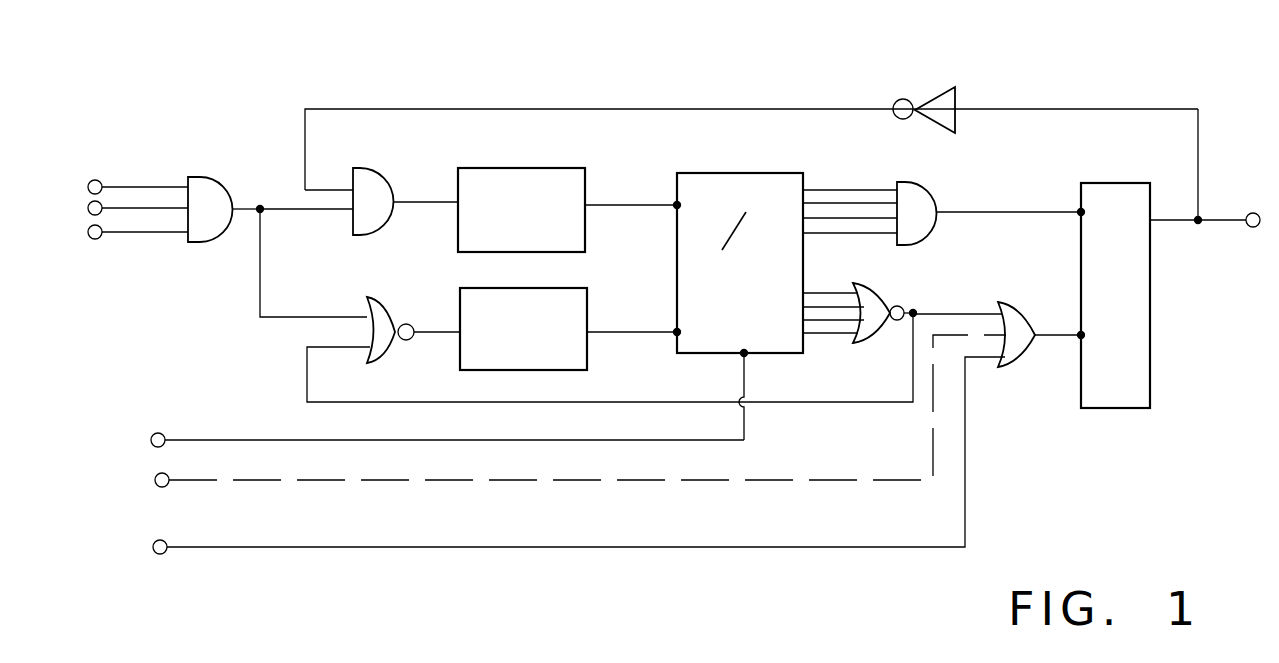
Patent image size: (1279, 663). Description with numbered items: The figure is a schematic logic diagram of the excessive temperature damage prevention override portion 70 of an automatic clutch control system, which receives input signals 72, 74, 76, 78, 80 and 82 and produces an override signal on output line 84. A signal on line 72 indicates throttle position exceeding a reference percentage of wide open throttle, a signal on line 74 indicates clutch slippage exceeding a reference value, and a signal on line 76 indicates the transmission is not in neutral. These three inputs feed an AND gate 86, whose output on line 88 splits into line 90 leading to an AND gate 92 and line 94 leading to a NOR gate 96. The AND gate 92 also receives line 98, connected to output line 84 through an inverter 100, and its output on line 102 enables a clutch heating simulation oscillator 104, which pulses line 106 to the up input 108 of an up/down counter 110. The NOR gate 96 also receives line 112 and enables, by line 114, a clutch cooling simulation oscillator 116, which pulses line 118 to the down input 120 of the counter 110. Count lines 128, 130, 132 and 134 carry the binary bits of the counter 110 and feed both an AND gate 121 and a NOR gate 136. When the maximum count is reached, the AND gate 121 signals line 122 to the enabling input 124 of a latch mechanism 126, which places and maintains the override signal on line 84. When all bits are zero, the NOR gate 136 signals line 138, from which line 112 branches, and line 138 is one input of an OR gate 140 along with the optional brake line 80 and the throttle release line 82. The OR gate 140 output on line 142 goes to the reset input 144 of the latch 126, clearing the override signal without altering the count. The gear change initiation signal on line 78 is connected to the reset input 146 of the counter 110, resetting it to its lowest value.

The excessive temperature damage prevention override portion 70 is at (712, 86).
The throttle position signal line 72 is at (116, 186).
The clutch slippage signal line 74 is at (138, 208).
The not-in-neutral signal line 76 is at (160, 232).
The gear change initiation signal line 78 is at (236, 440).
The brake application signal line 80 is at (275, 480).
The throttle release signal line 82 is at (298, 547).
The output line 84 is at (1228, 217).
The AND gate 86 is at (212, 178).
The signal line 88 is at (247, 207).
The line 90 is at (292, 209).
The AND gate 92 is at (392, 142).
The line 94 is at (262, 275).
The NOR gate 96 is at (405, 285).
The line 98 is at (521, 108).
The inverter 100 is at (935, 88).
The line 102 is at (422, 202).
The clutch heating simulation oscillator 104 is at (530, 168).
The line 106 is at (630, 204).
The up input 108 is at (676, 204).
The up/down counter 110 is at (748, 173).
The line 112 is at (426, 402).
The line 114 is at (436, 330).
The clutch cooling simulation oscillator 116 is at (506, 288).
The line 118 is at (640, 331).
The down input 120 is at (674, 336).
The AND gate 121 is at (925, 184).
The line 122 is at (968, 212).
The enabling input 124 is at (1077, 210).
The latch mechanism 126 is at (1138, 183).
The count line 128 is at (820, 190).
The count line 130 is at (838, 203).
The count line 132 is at (852, 218).
The count line 134 is at (850, 233).
The NOR gate 136 is at (895, 308).
The line 138 is at (946, 314).
The OR gate 140 is at (1030, 308).
The line 142 is at (1042, 341).
The reset input 144 is at (1078, 340).
The reset input 146 is at (740, 356).